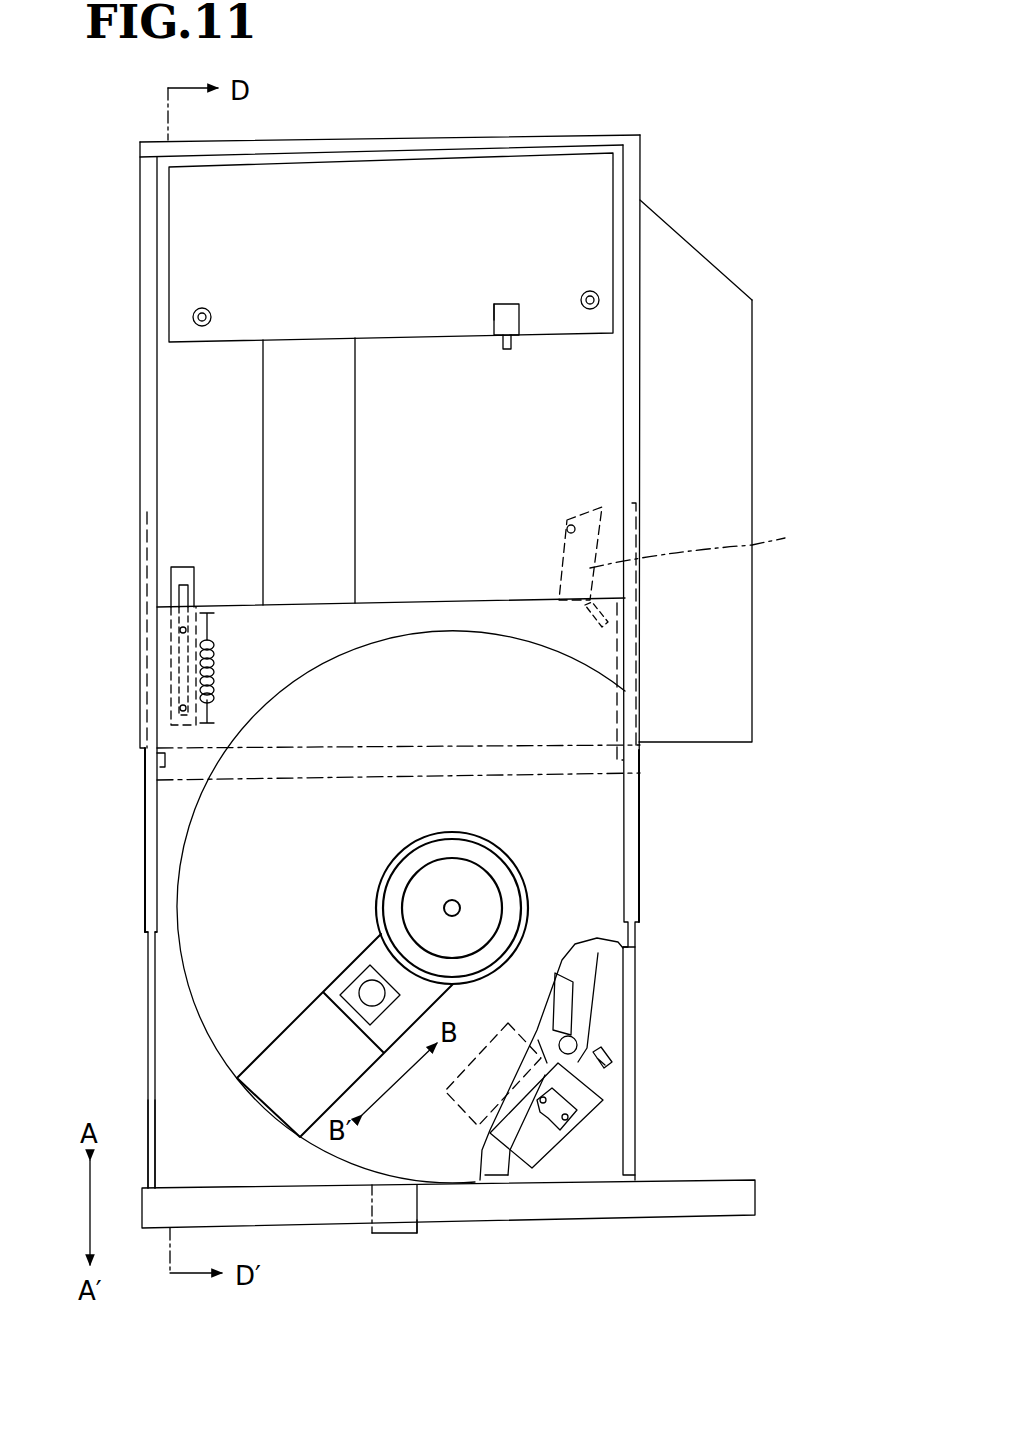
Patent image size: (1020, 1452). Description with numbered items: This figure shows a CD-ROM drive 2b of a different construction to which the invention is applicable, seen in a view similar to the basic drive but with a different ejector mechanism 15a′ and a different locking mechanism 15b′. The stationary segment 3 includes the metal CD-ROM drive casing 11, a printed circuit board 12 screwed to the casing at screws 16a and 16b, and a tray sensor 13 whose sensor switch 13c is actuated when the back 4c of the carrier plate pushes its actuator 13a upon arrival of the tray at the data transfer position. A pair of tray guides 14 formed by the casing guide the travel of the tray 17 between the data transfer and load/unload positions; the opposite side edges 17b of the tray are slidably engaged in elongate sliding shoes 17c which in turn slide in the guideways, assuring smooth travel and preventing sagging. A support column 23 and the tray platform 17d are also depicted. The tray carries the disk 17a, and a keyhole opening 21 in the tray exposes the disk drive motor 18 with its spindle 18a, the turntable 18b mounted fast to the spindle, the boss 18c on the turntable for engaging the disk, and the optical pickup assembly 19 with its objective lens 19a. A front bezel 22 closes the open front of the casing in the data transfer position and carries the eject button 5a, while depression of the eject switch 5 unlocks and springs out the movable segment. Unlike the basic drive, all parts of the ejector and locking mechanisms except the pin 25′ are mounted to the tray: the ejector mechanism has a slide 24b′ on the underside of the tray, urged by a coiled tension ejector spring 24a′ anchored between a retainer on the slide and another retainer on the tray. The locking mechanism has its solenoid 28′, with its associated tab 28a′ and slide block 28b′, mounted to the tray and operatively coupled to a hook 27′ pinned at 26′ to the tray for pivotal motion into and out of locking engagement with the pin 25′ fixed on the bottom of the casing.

The CD-ROM drive 2b is at (760, 232).
The stationary segment 3 is at (760, 417).
The back of carrier plate 4c is at (627, 774).
The eject switch 5 is at (395, 1238).
The eject button 5a is at (419, 1230).
The CD-ROM drive casing 11 is at (373, 140).
The printed circuit board 12 is at (449, 172).
The tray sensor 13 is at (514, 296).
The actuator 13a is at (512, 349).
The sensor switch 13c is at (493, 303).
The tray guides 14 is at (147, 490).
The ejector mechanism 15a′ is at (160, 672).
The locking mechanism 15b′ is at (605, 1090).
The screw 16a is at (599, 300).
The screw 16b is at (193, 313).
The tray 17 is at (632, 942).
The disc 17a is at (183, 878).
The side edges 17b is at (149, 1086).
The sliding shoes 17c is at (640, 818).
The tray platform 17d is at (234, 606).
The disk drive motor 18 is at (530, 863).
The spindle 18a is at (462, 906).
The turntable 18b is at (512, 913).
The boss 18c is at (477, 937).
The optical pickup assembly 19 is at (332, 1034).
The objective lens 19a is at (360, 987).
The keyhole opening 21 is at (446, 994).
The front bezel 22 is at (502, 1185).
The support column 23 is at (357, 470).
The ejector spring 24a′ is at (216, 672).
The slide 24b′ is at (172, 577).
The pin 25′ is at (567, 531).
The pivot pin 26′ is at (578, 1045).
The hook 27′ is at (593, 992).
The solenoid 28′ is at (563, 1162).
The bracket tab 28a′ is at (610, 1068).
The slide block 28b′ is at (574, 1130).